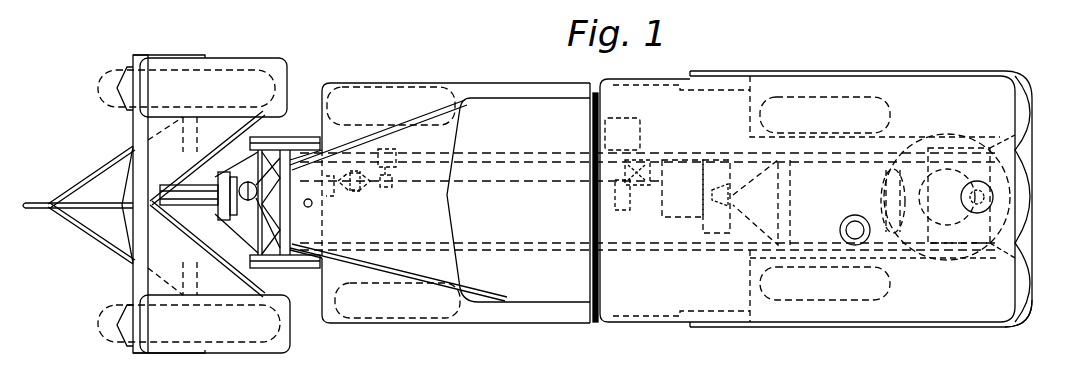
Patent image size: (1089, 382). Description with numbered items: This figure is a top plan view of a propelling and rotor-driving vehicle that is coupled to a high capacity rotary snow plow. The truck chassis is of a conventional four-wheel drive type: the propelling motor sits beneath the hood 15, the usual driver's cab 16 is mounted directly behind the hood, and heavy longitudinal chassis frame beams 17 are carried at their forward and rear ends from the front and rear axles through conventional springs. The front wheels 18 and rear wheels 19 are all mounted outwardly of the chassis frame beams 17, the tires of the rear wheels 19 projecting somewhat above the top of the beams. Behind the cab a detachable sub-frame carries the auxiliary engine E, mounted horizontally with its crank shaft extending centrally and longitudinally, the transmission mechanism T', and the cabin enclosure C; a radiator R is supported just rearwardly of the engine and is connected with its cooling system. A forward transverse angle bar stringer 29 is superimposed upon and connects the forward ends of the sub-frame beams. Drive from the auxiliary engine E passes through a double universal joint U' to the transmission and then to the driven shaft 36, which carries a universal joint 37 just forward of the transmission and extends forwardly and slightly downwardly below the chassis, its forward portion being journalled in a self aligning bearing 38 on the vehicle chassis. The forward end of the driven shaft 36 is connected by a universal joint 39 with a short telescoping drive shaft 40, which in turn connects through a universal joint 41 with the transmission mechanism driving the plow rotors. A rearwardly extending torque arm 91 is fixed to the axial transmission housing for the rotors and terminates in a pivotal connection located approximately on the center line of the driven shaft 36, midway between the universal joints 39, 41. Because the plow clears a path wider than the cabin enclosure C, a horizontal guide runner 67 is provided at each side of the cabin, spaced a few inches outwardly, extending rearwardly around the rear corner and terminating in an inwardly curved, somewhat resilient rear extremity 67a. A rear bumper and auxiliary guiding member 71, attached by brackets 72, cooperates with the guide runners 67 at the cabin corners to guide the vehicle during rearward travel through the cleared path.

The hood 15 is at (433, 135).
The driver's cab 16 is at (502, 124).
The chassis frame beams 17 is at (518, 160).
The front wheels 18 is at (368, 97).
The rear wheels 19 is at (885, 112).
The forward transverse angle bar stringer 29 is at (596, 322).
The driven shaft 36 is at (500, 180).
The universal joint 37 is at (675, 200).
The self aligning bearing 38 is at (395, 170).
The universal joint 39 is at (362, 190).
The telescoping drive shaft 40 is at (332, 190).
The universal joint 41 is at (241, 202).
The horizontal guide runner 67 is at (842, 70).
The rear extremity 67a is at (1022, 322).
The rear bumper and auxiliary guiding member 71 is at (1030, 153).
The brackets 72 is at (1000, 252).
The torque arm 91 is at (252, 270).
The cabin enclosure C is at (953, 85).
The auxiliary engine E is at (842, 215).
The radiator R is at (975, 254).
The transmission T' is at (682, 203).
The universal drive U' is at (746, 203).